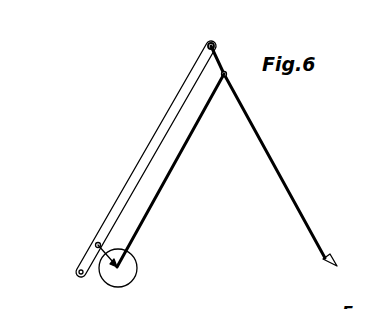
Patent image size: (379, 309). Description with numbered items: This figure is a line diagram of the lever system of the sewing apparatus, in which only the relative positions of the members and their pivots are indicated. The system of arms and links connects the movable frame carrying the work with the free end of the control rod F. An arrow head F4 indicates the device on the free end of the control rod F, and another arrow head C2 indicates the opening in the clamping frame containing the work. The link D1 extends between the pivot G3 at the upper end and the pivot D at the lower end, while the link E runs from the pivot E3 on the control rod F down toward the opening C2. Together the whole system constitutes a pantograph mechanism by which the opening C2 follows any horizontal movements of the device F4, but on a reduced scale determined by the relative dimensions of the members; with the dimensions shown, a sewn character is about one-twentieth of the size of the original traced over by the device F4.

The link D1 is at (156, 137).
The pivot G3 is at (214, 43).
The control rod F is at (268, 152).
The pivot E3 is at (226, 71).
The link E is at (176, 165).
The opening in the clamping frame C2 is at (122, 274).
The pivot D is at (78, 269).
The device on the free end of the control rod F4 is at (344, 249).